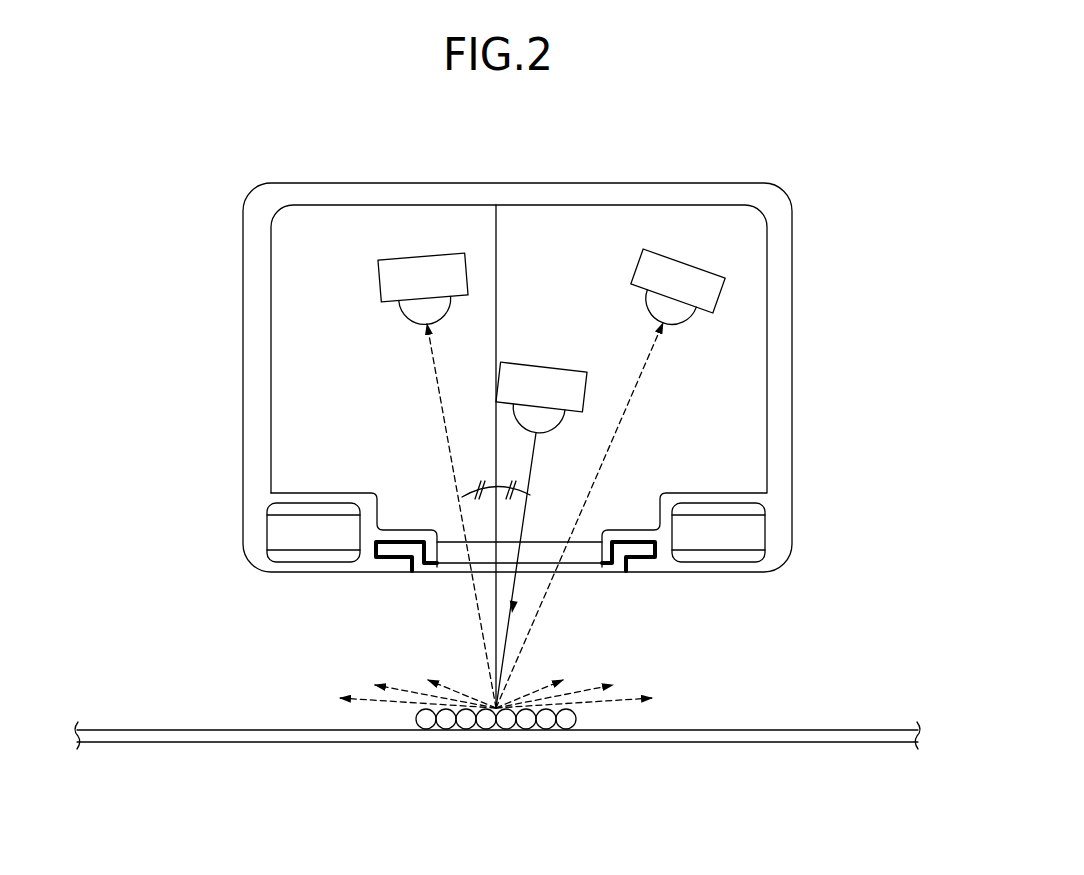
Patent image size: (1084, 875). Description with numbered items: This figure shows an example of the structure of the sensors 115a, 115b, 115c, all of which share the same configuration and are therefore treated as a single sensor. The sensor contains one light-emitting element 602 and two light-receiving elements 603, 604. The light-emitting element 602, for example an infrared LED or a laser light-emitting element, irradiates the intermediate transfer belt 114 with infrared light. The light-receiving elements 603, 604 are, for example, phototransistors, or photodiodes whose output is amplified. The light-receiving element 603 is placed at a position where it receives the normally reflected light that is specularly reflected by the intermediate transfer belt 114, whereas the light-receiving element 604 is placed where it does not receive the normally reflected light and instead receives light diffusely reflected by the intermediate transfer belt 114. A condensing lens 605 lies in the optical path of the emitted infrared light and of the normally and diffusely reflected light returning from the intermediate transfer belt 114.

The sensor 115a is at (561, 422).
The sensor 115b is at (561, 422).
The sensor 115c is at (732, 183).
The light-emitting element 602 is at (552, 368).
The light-receiving element 603 is at (378, 279).
The light-receiving element 604 is at (717, 296).
The condensing lens 605 is at (586, 573).
The intermediate transfer belt 114 is at (213, 742).